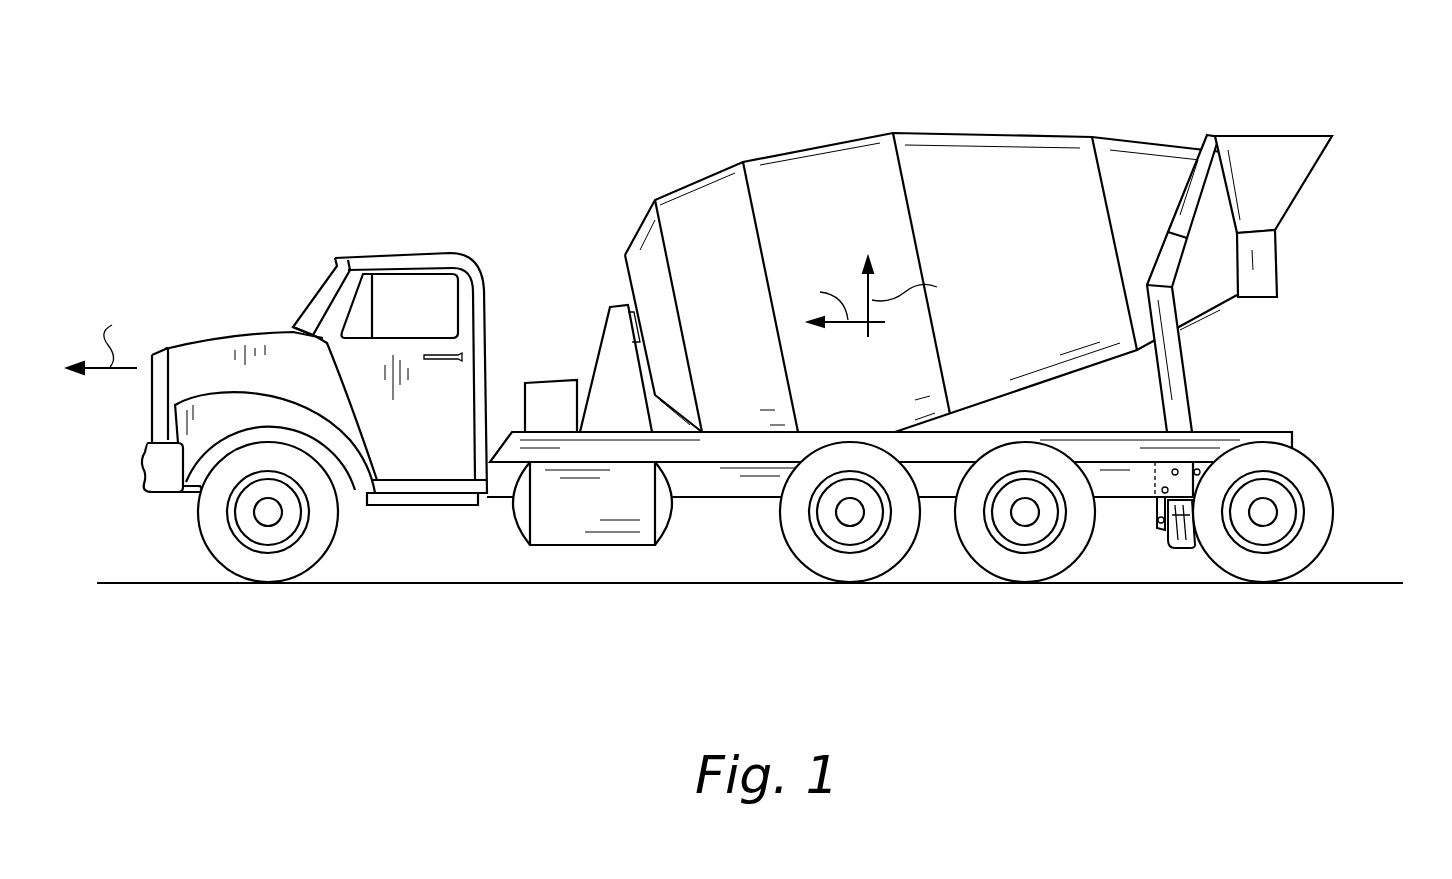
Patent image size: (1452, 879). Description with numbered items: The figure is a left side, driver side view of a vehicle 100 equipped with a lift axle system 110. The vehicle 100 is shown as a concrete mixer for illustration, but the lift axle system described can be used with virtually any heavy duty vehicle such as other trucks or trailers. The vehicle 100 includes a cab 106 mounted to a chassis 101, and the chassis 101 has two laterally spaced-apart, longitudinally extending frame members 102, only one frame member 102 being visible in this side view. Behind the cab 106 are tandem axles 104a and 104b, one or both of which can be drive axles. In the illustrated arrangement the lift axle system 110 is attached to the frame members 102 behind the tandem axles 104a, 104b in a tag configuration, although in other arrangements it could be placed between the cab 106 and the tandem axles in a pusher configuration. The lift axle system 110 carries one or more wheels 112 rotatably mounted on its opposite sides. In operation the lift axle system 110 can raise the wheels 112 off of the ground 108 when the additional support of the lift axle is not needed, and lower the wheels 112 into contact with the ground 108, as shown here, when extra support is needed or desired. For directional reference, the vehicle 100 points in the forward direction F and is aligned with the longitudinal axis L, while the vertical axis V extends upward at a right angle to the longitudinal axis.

The vehicle 100 is at (692, 92).
The chassis 101 is at (740, 525).
The frame member 102 is at (1125, 498).
The tandem axle 104a is at (843, 515).
The tandem axle 104b is at (1012, 513).
The cab 106 is at (377, 257).
The ground 108 is at (1355, 583).
The lift axle system 110 is at (1153, 555).
The wheels 112 is at (1333, 497).